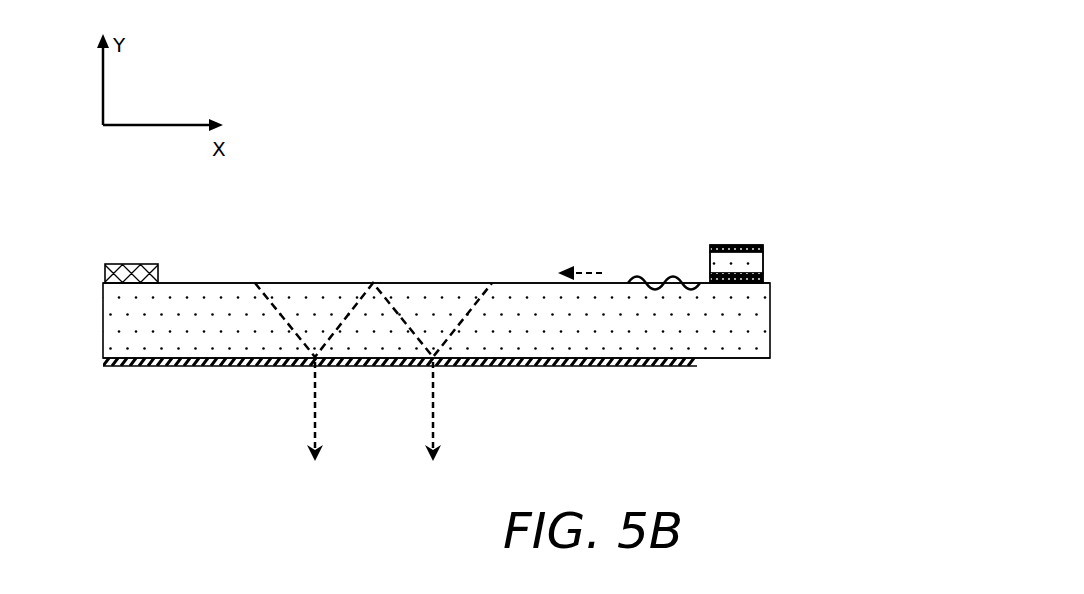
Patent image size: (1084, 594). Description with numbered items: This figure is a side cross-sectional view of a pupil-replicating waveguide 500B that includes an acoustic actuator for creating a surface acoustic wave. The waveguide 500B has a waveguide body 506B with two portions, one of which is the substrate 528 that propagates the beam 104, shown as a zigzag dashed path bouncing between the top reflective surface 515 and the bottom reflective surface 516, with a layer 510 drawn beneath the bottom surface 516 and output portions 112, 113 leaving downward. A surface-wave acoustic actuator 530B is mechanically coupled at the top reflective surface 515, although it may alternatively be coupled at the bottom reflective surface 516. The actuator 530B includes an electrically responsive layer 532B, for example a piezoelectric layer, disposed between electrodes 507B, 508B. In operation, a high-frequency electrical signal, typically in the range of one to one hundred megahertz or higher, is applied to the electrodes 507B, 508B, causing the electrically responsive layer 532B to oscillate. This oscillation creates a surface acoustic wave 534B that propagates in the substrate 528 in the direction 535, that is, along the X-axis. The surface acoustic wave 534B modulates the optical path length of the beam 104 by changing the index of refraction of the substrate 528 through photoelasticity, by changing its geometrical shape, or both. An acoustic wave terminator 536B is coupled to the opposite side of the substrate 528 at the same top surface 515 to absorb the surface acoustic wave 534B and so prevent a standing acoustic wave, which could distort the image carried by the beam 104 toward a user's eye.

The pupil-replicating waveguide 500B is at (446, 155).
The substrate 528 is at (205, 333).
The reflective bottom layer 510 is at (203, 366).
The acoustic wave terminator 536B is at (127, 264).
The beam 104 is at (276, 308).
The first output light 112 is at (296, 411).
The second output light 113 is at (415, 411).
The top reflective surface 515 is at (440, 276).
The bottom reflective surface 516 is at (704, 368).
The direction 535 is at (578, 272).
The surface acoustic wave 534B is at (660, 283).
The electrode 508B is at (792, 287).
The electrically responsive layer 532B is at (763, 265).
The electrode 507B is at (738, 283).
The surface-wave acoustic actuator 530B is at (824, 203).
The waveguide body 506B is at (365, 525).